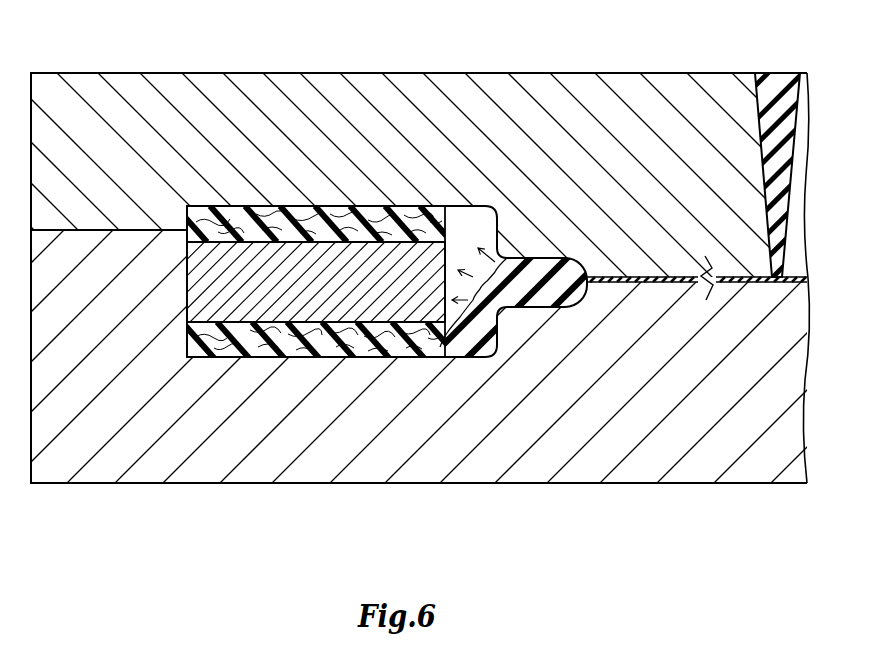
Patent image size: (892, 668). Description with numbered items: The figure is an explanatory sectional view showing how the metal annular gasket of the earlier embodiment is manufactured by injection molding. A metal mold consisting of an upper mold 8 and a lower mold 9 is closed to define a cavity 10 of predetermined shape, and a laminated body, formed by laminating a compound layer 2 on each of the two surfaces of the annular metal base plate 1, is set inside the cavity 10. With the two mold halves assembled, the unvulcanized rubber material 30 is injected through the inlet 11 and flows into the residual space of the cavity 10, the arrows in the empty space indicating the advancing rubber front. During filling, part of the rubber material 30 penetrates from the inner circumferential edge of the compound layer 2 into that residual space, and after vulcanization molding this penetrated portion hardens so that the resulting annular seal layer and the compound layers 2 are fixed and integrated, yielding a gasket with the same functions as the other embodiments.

The annular metal base plate 1 is at (288, 296).
The compound layer 2 is at (304, 215).
The upper mold 8 is at (95, 88).
The lower mold 9 is at (148, 465).
The cavity 10 is at (458, 243).
The runner 11 is at (771, 97).
The unvulcanized rubber material 30 is at (789, 95).